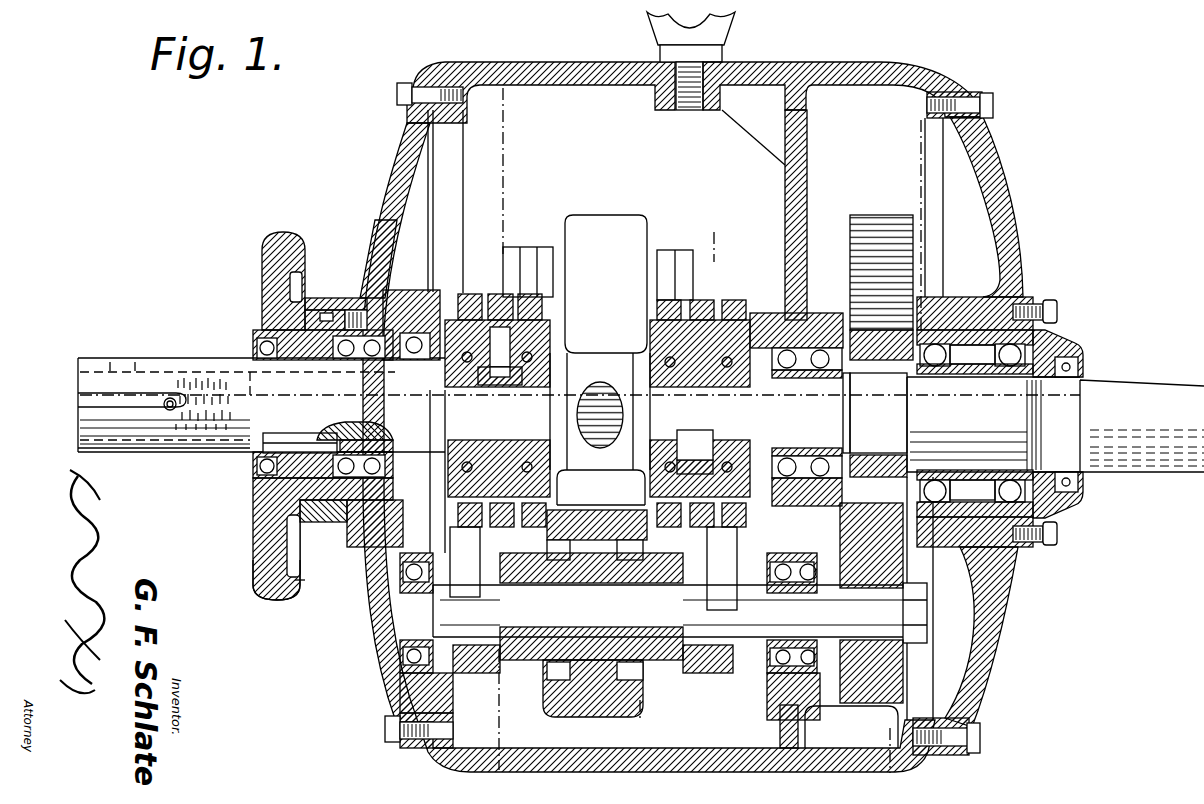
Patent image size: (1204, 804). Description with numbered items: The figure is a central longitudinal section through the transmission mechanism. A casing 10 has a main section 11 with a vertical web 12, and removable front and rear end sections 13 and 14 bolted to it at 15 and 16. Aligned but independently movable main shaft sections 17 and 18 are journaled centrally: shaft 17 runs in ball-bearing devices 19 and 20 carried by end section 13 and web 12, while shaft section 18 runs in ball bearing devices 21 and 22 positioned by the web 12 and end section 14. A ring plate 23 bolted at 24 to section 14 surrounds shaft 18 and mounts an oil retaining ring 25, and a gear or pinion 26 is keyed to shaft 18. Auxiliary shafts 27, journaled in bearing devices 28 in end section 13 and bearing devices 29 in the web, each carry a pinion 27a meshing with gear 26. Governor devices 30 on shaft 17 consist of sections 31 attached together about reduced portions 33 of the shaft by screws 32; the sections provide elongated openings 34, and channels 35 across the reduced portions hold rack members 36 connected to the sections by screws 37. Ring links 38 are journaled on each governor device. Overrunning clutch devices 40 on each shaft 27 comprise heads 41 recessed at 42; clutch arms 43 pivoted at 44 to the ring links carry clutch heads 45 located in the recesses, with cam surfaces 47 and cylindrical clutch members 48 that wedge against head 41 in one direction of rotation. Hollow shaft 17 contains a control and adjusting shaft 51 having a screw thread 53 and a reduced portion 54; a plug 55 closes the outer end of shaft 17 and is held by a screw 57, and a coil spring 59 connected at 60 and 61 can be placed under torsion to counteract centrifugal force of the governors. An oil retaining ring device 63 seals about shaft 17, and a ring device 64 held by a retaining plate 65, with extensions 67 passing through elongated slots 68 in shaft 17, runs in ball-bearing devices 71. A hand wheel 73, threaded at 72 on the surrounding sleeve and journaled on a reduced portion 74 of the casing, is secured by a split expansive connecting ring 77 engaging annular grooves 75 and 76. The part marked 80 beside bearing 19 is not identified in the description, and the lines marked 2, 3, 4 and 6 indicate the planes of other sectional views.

The section line 2- 2 is at (520, 41).
The section line 3- 3 is at (896, 48).
The section line 4- 4 is at (700, 206).
The section line 6- 6 is at (658, 503).
The casing 10 is at (803, 58).
The main section 11 is at (848, 64).
The vertical web 12 is at (807, 187).
The front end section 13 is at (385, 159).
The rear end section 14 is at (1003, 187).
The bolt 15 is at (398, 94).
The bolt 16 is at (994, 107).
The front main shaft section 17 is at (210, 356).
The rear main shaft section 18 is at (1143, 392).
The ball-bearing device 19 is at (431, 290).
The ball-bearing device 20 is at (768, 330).
The ball bearing device 21 is at (823, 348).
The ball bearing device 22 is at (937, 344).
The ring plate 23 is at (1013, 422).
The bolt 24 is at (1050, 302).
The oil retaining ring 25 is at (1085, 368).
The gear or pinion 26 is at (882, 330).
The auxiliary shaft 27 is at (680, 613).
The pinion 27a is at (893, 215).
The antifriction bearing device 28 is at (398, 652).
The anti-friction bearing device 29 is at (768, 668).
The governor device 30 is at (535, 337).
The section 31 is at (700, 446).
The screw 32 is at (628, 384).
The reduced portion 33 is at (605, 436).
The elongated opening 34 is at (470, 370).
The channel 35 is at (776, 404).
The rack member 36 is at (507, 398).
The screw 37 is at (546, 306).
The ring link 38 is at (497, 296).
The overrunning clutch device 40 is at (636, 213).
The clutch head 41 is at (613, 215).
The recess 42 is at (645, 694).
The clutch arm 43 is at (482, 656).
The pivot 44 is at (400, 596).
The clutch head 45 is at (548, 548).
The cam surface 47 is at (562, 586).
The cylindrical clutch member 48 is at (547, 672).
The control and adjusting shaft 51 is at (810, 390).
The screw thread 53 is at (365, 428).
The reduced portion 54 is at (252, 468).
The plug 55 is at (147, 356).
The screw 57 is at (122, 452).
The coil spring 59 is at (192, 357).
The spring end connection 60 is at (238, 357).
The spring end connection 61 is at (182, 452).
The oil retaining ring device 63 is at (252, 345).
The ring device 64 is at (372, 296).
The retaining plate 65 is at (397, 297).
The extension 67 is at (335, 428).
The elongated slot 68 is at (288, 330).
The ball-bearing device 71 is at (352, 328).
The screw threaded engagement 72 is at (270, 497).
The hand wheel 73 is at (255, 575).
The reduced portion 74 is at (285, 506).
The annular groove 75 is at (308, 578).
The annular groove 76 is at (326, 298).
The split expansive connecting ring 77 is at (322, 523).
The bearing support 80 is at (448, 292).